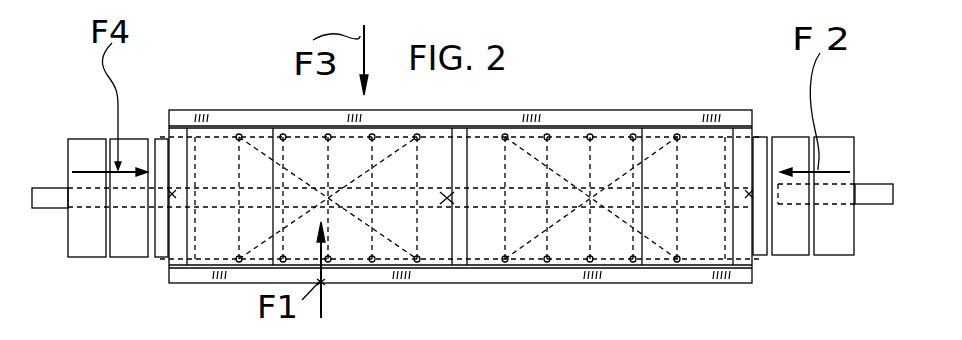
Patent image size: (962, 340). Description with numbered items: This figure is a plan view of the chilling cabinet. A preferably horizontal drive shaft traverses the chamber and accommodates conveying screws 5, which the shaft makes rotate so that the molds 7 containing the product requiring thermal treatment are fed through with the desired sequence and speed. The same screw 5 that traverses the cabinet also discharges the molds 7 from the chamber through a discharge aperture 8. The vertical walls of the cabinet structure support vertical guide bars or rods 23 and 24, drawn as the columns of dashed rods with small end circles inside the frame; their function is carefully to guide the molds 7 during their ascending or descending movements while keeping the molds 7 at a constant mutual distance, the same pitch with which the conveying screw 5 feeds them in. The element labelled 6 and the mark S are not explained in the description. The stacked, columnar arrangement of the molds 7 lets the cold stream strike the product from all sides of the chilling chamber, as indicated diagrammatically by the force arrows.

The conveying screw 5 is at (880, 193).
The coupling element 6 is at (758, 167).
The mold 7 is at (85, 150).
The discharge aperture 8 is at (176, 192).
The vertical guide bar 23 is at (330, 133).
The vertical guide bar 24 is at (589, 130).
The shaft axis S is at (498, 190).